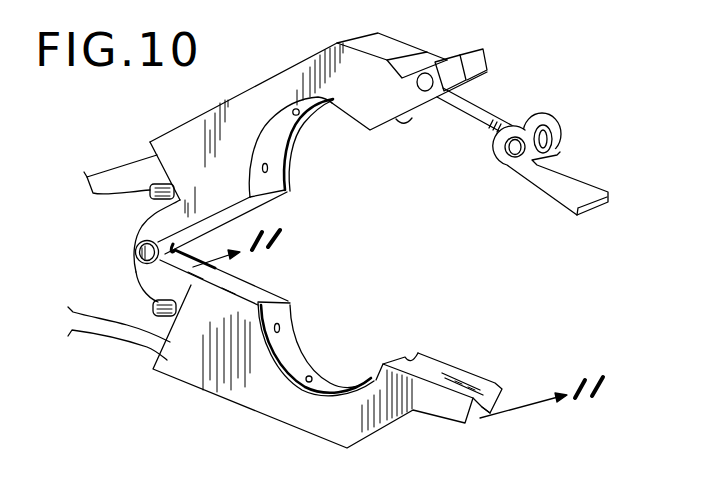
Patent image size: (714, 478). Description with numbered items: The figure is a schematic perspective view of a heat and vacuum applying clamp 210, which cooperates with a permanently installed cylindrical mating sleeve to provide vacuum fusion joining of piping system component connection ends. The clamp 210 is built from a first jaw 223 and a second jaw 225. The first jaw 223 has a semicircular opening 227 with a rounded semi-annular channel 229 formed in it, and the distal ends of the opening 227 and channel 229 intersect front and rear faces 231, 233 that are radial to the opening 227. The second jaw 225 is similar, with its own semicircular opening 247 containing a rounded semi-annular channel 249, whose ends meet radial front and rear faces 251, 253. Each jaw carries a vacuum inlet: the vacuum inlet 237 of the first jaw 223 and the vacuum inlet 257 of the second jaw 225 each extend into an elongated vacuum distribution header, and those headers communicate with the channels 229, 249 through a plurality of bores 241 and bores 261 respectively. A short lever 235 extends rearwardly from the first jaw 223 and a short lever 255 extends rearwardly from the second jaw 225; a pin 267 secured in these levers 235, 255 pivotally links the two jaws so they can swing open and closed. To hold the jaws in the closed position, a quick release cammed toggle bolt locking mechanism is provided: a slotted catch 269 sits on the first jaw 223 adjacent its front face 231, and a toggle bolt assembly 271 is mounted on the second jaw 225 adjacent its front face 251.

The heat and vacuum applying clamp 210 is at (558, 68).
The first jaw 223 is at (392, 430).
The second jaw 225 is at (400, 40).
The semicircular opening 227 is at (305, 349).
The rounded semi-annular channel 229 is at (281, 342).
The front face 231 is at (437, 364).
The rear face 233 is at (260, 293).
The short lever 235 is at (135, 276).
The vacuum inlet 237 is at (154, 303).
The bores 241 is at (308, 382).
The semicircular opening 247 is at (294, 157).
The rounded semi-annular channel 249 is at (281, 180).
The front face 251 is at (412, 119).
The rear face 253 is at (244, 212).
The short lever 255 is at (134, 238).
The vacuum inlet 257 is at (143, 202).
The bores 261 is at (299, 114).
The pin 267 is at (140, 258).
The slotted catch 269 is at (484, 414).
The toggle bolt assembly 271 is at (491, 68).